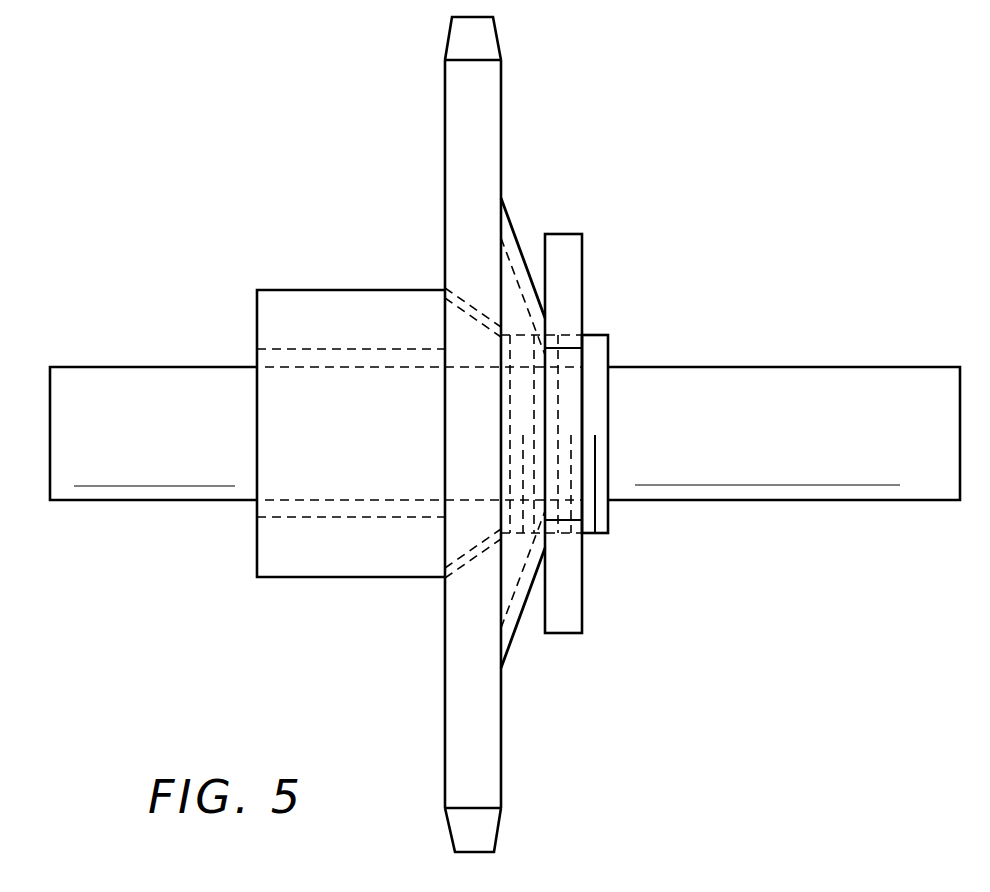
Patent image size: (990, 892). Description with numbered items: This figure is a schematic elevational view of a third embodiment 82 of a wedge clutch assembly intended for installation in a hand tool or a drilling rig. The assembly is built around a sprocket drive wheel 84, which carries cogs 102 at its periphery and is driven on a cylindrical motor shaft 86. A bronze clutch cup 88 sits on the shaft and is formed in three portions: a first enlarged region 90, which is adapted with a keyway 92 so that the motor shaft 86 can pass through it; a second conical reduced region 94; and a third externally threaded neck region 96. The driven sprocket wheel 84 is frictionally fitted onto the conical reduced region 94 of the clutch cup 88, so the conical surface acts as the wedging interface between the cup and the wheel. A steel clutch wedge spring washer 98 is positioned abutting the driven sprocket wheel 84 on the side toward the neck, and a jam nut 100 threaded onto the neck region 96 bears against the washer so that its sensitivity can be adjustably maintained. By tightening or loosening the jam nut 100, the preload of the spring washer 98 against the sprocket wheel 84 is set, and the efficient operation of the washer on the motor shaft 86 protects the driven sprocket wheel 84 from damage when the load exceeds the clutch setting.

The third embodiment of wedge clutch assembly 82 is at (746, 200).
The sprocket drive wheel 84 is at (457, 153).
The motor shaft 86 is at (753, 448).
The clutch cup 88 is at (323, 424).
The first enlarged region 90 is at (292, 272).
The keyway 92 is at (222, 348).
The second conical reduced region 94 is at (479, 576).
The third externally threaded neck region 96 is at (608, 535).
The steel clutch wedge spring washer 98 is at (517, 633).
The jam nut 100 is at (568, 234).
The cogs 102 is at (473, 33).